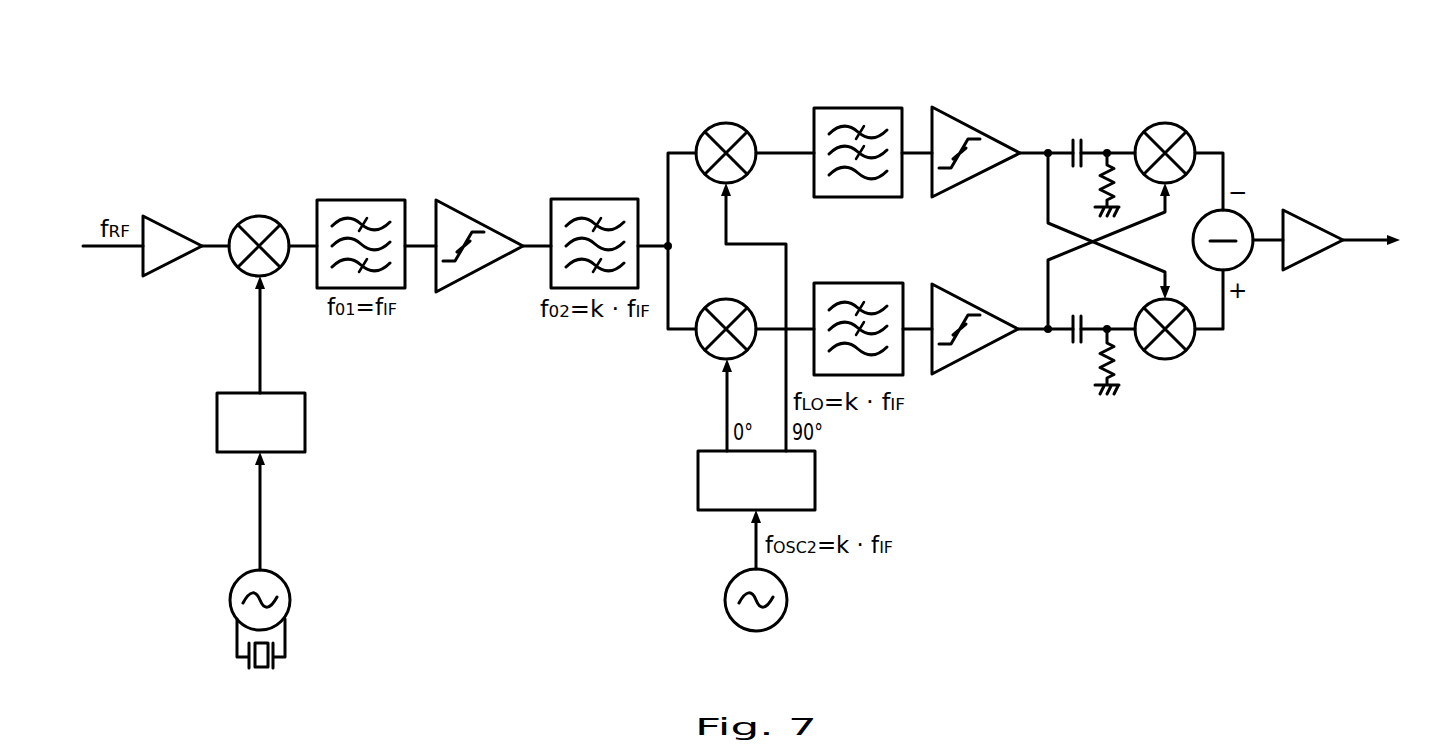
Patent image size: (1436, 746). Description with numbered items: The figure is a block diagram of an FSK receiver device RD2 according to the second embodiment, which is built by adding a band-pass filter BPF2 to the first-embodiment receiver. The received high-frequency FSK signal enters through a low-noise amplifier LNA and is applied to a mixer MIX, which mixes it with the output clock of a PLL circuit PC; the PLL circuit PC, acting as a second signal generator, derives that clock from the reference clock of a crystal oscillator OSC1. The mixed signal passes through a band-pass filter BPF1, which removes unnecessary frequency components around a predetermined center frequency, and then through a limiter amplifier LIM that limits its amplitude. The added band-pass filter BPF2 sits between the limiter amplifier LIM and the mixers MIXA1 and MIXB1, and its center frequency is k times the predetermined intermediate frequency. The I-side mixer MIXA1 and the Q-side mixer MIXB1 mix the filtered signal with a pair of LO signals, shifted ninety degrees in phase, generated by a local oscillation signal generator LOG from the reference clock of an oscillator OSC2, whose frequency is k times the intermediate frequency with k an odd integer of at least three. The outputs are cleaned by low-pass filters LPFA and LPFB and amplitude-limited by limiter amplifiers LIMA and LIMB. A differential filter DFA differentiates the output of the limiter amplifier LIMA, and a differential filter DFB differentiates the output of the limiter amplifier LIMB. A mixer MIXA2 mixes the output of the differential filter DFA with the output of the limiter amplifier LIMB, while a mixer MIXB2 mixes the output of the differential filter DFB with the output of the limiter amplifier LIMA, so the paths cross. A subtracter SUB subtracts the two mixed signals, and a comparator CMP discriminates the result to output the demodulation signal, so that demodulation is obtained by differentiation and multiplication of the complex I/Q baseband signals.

The FSK receiver device RD2 is at (462, 98).
The low-noise amplifier LNA is at (172, 234).
The mixer MIX is at (259, 232).
The band-pass filter BPF1 is at (361, 228).
The limiter amplifier LIM is at (479, 238).
The band-pass filter BPF2 is at (594, 228).
The mixer MIXA1 is at (725, 138).
The mixer MIXB1 is at (725, 315).
The low-pass filter LPFA is at (858, 138).
The low-pass filter LPFB is at (858, 314).
The limiter amplifier LIMA is at (976, 144).
The limiter amplifier LIMB is at (975, 321).
The differential filter DFA is at (1094, 165).
The differential filter DFB is at (1095, 342).
The mixer MIXA2 is at (1164, 139).
The mixer MIXB2 is at (1164, 343).
The subtracter SUB is at (1203, 240).
The comparator CMP is at (1313, 227).
The PLL circuit PC is at (261, 422).
The crystal oscillator OSC1 is at (285, 619).
The local oscillation signal generator LOG is at (756, 480).
The oscillator OSC2 is at (782, 600).